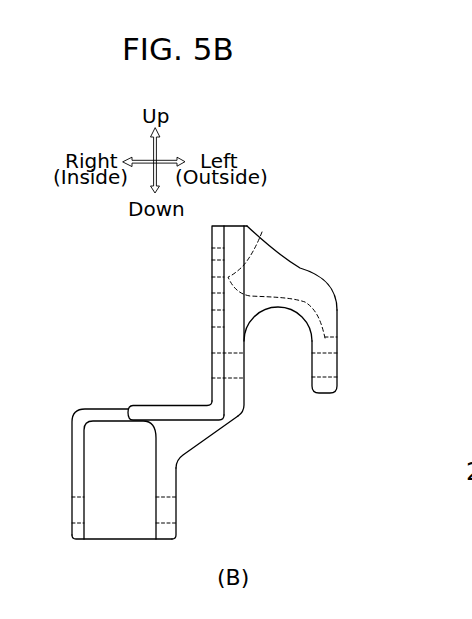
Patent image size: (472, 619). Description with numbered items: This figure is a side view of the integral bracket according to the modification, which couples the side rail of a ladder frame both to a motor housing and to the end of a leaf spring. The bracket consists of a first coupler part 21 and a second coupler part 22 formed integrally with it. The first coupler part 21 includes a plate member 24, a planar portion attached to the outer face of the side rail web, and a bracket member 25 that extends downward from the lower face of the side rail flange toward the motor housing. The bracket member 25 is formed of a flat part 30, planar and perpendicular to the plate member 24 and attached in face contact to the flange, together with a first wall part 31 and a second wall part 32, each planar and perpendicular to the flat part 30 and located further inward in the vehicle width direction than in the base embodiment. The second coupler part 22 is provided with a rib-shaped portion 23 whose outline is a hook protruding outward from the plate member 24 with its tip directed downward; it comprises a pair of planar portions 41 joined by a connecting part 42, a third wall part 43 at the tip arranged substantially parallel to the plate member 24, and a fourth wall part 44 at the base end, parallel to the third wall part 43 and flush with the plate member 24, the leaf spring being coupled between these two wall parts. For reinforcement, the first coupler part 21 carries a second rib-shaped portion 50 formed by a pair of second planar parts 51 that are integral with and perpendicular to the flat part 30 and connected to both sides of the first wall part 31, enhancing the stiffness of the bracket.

The first coupler part 21 is at (263, 523).
The second coupler part 22 is at (368, 313).
The rib-shaped portion 23 is at (330, 253).
The plate member 24 is at (212, 311).
The bracket member 25 is at (53, 407).
The flat part 30 is at (158, 405).
The first wall part 31 is at (176, 530).
The second wall part 32 is at (72, 450).
The planar portion 41 is at (278, 308).
The connecting part 42 is at (260, 238).
The third wall part 43 is at (337, 344).
The fourth wall part 44 is at (245, 392).
The second rib-shaped portion 50 is at (245, 442).
The second planar part 51 is at (210, 443).